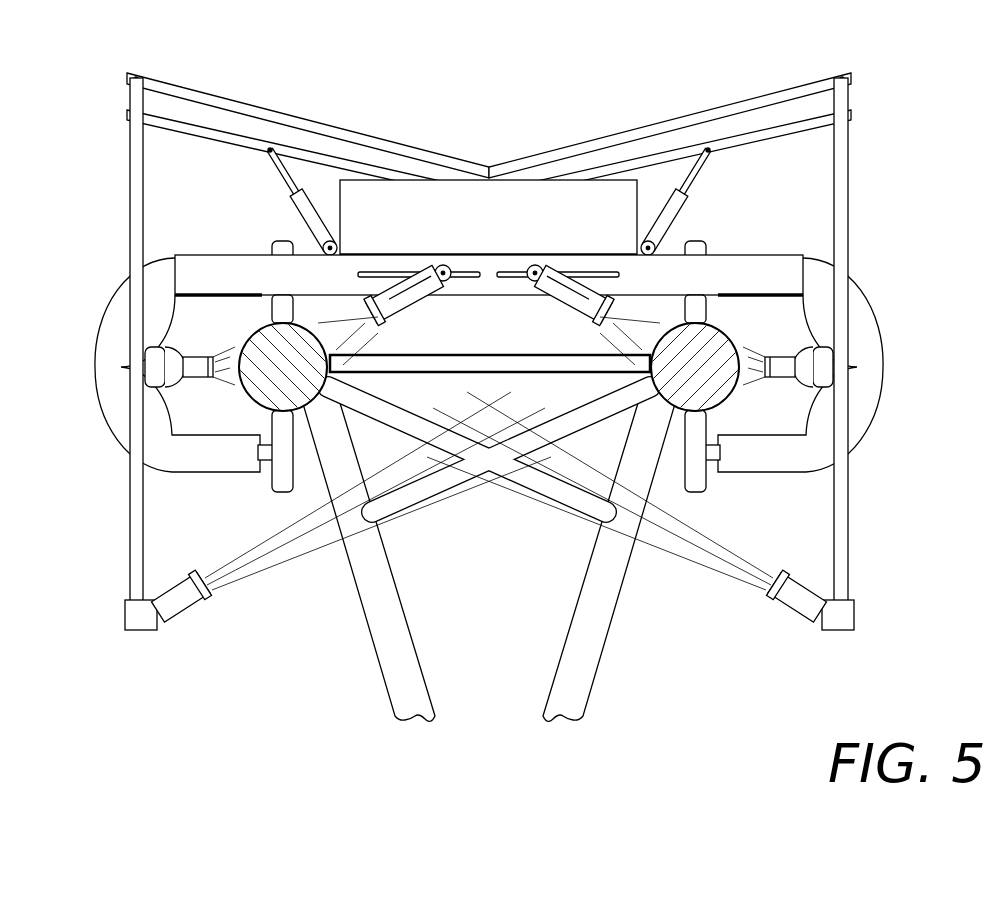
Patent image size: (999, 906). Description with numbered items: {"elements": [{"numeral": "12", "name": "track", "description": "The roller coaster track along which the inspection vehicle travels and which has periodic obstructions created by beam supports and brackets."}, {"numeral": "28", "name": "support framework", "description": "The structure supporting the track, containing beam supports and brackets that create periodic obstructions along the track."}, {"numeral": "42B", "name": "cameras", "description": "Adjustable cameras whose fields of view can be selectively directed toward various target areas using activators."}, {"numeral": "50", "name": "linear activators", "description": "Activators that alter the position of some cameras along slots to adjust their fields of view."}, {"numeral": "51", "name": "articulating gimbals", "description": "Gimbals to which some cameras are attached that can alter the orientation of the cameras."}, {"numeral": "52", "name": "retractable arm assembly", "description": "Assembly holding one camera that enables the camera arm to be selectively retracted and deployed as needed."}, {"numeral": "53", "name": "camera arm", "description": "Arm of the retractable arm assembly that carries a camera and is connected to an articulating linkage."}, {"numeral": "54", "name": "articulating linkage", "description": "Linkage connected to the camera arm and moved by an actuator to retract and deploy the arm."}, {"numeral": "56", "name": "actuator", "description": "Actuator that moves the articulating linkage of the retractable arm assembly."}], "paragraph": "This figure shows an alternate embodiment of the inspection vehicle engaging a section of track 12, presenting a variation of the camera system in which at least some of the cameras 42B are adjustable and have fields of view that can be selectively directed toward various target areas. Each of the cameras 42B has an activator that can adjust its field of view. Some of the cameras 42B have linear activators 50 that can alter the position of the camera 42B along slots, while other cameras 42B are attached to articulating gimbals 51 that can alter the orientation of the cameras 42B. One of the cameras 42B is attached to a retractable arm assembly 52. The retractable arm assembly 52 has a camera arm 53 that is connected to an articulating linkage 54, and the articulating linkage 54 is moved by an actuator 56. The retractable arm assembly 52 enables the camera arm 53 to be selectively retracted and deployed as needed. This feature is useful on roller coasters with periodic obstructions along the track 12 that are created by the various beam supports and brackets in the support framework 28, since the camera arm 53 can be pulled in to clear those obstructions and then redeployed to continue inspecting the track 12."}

The frame leg 12 is at (603, 668).
The frame leg 28 is at (378, 583).
The spray nozzle 42B is at (531, 270).
The nozzle mount 50 is at (441, 266).
The side spray nozzle 51 is at (168, 367).
The upper support bar 52 is at (215, 95).
The vertical post 53 is at (130, 270).
The lower support bar 54 is at (243, 143).
The hydraulic cylinder 56 is at (305, 213).